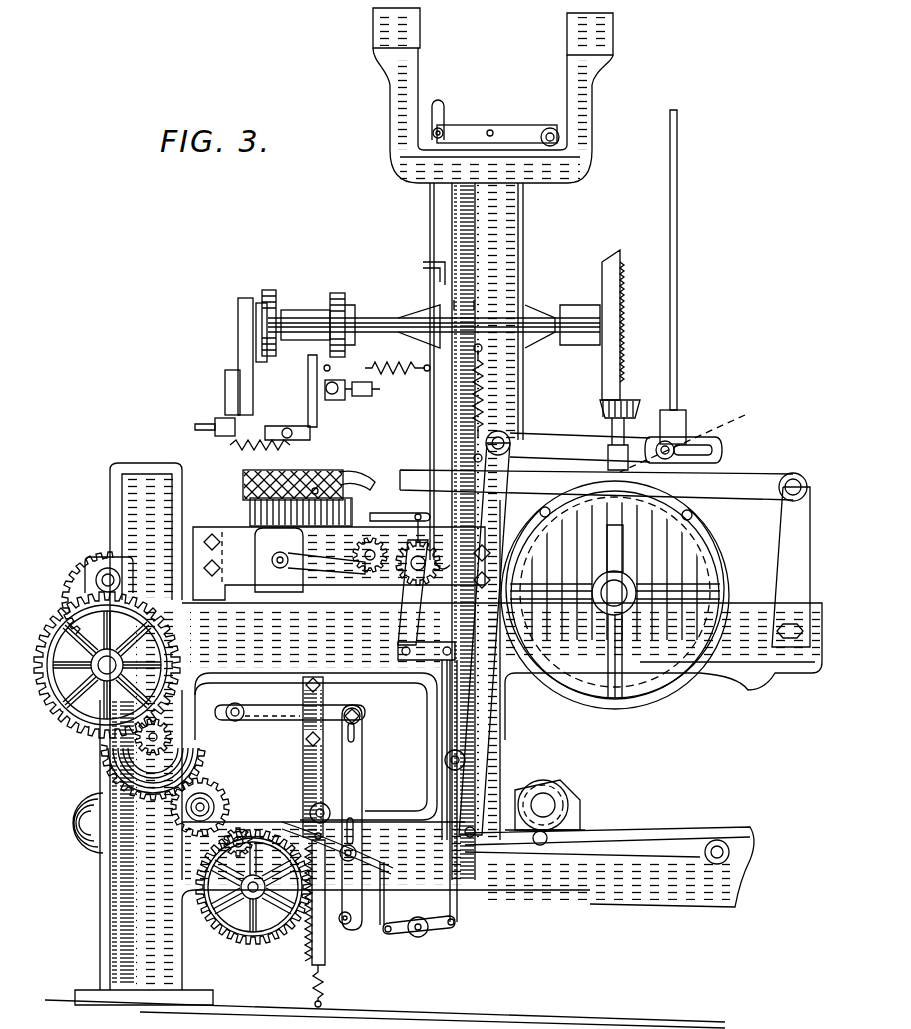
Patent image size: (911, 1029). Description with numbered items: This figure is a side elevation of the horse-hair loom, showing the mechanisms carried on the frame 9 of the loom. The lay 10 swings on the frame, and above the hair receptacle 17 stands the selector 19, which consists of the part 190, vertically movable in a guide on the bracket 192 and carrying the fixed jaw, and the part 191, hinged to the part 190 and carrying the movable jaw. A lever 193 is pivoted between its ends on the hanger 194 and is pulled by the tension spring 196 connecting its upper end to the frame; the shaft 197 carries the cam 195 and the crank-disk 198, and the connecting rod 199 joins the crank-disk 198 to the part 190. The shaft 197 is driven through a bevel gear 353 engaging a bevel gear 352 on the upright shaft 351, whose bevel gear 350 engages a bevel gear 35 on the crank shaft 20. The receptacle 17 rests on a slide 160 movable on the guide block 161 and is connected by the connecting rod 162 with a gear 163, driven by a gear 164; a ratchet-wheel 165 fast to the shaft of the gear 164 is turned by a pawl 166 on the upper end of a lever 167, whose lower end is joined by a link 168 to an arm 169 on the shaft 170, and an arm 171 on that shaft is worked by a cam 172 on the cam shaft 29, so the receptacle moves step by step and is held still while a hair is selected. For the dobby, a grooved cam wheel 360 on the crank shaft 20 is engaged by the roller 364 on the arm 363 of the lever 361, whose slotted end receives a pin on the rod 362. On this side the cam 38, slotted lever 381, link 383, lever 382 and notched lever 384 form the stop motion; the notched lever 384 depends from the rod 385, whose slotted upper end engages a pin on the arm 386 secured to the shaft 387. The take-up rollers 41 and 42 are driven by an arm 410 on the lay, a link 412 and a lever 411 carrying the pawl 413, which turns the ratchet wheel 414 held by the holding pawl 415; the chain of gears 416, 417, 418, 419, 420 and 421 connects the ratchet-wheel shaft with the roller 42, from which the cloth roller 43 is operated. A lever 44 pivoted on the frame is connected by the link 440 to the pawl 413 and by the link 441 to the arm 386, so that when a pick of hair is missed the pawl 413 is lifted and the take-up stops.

The frame 9 is at (524, 240).
The lay 10 is at (242, 475).
The receptacle 17 is at (248, 502).
The selector 19 is at (300, 453).
The crank shaft 20 is at (615, 600).
The cam shaft 29 is at (540, 780).
The bevel gear 35 is at (733, 558).
The cam 38 is at (515, 790).
The take-up roller 41 is at (95, 548).
The take-up roller 42 is at (78, 632).
The cloth roller 43 is at (82, 818).
The lever 44 is at (435, 935).
The slide 160 is at (270, 552).
The guide block 161 is at (215, 548).
The connecting rod 162 is at (315, 488).
The gear 163 is at (366, 540).
The gear 164 is at (415, 540).
The ratchet-wheel 165 is at (405, 512).
The pawl 166 is at (418, 520).
The lever 167 is at (410, 630).
The link 168 is at (445, 660).
The arm 169 is at (455, 724).
The shaft 170 is at (450, 757).
The arm 171 is at (548, 795).
The cam 172 is at (585, 810).
The part of selector 190 is at (225, 398).
The part of selector 191 is at (308, 398).
The bracket 192 is at (243, 330).
The lever 193 is at (332, 395).
The hanger 194 is at (360, 392).
The cam 195 is at (340, 298).
The tension spring 196 is at (392, 362).
The shaft 197 is at (318, 312).
The crank-disk 198 is at (268, 298).
The connecting rod 199 is at (258, 330).
The bevel gear 350 is at (718, 543).
The upright shaft 351 is at (690, 410).
The bevel gear 352 is at (662, 440).
The bevel gear 353 is at (612, 268).
The grooved cam wheel 360 is at (692, 512).
The lever 361 is at (685, 418).
The rod 362 is at (683, 128).
The arm 363 is at (595, 445).
The roller 364 is at (680, 470).
The slotted lever 381 is at (530, 445).
The lever 382 is at (625, 845).
The link 383 is at (470, 790).
The notched lever 384 is at (428, 428).
The rod 385 is at (445, 125).
The arm 386 is at (492, 135).
The shaft 387 is at (558, 132).
The arm 410 is at (232, 720).
The lever 411 is at (363, 718).
The link 412 is at (355, 770).
The pawl 413 is at (340, 822).
The ratchet wheel 414 is at (255, 938).
The holding pawl 415 is at (328, 788).
The gear 416 is at (240, 910).
The gear 417 is at (240, 828).
The gear 418 is at (215, 795).
The gear 419 is at (118, 770).
The gear 420 is at (105, 752).
The gear 421 is at (140, 735).
The link 440 is at (382, 925).
The link 441 is at (470, 290).